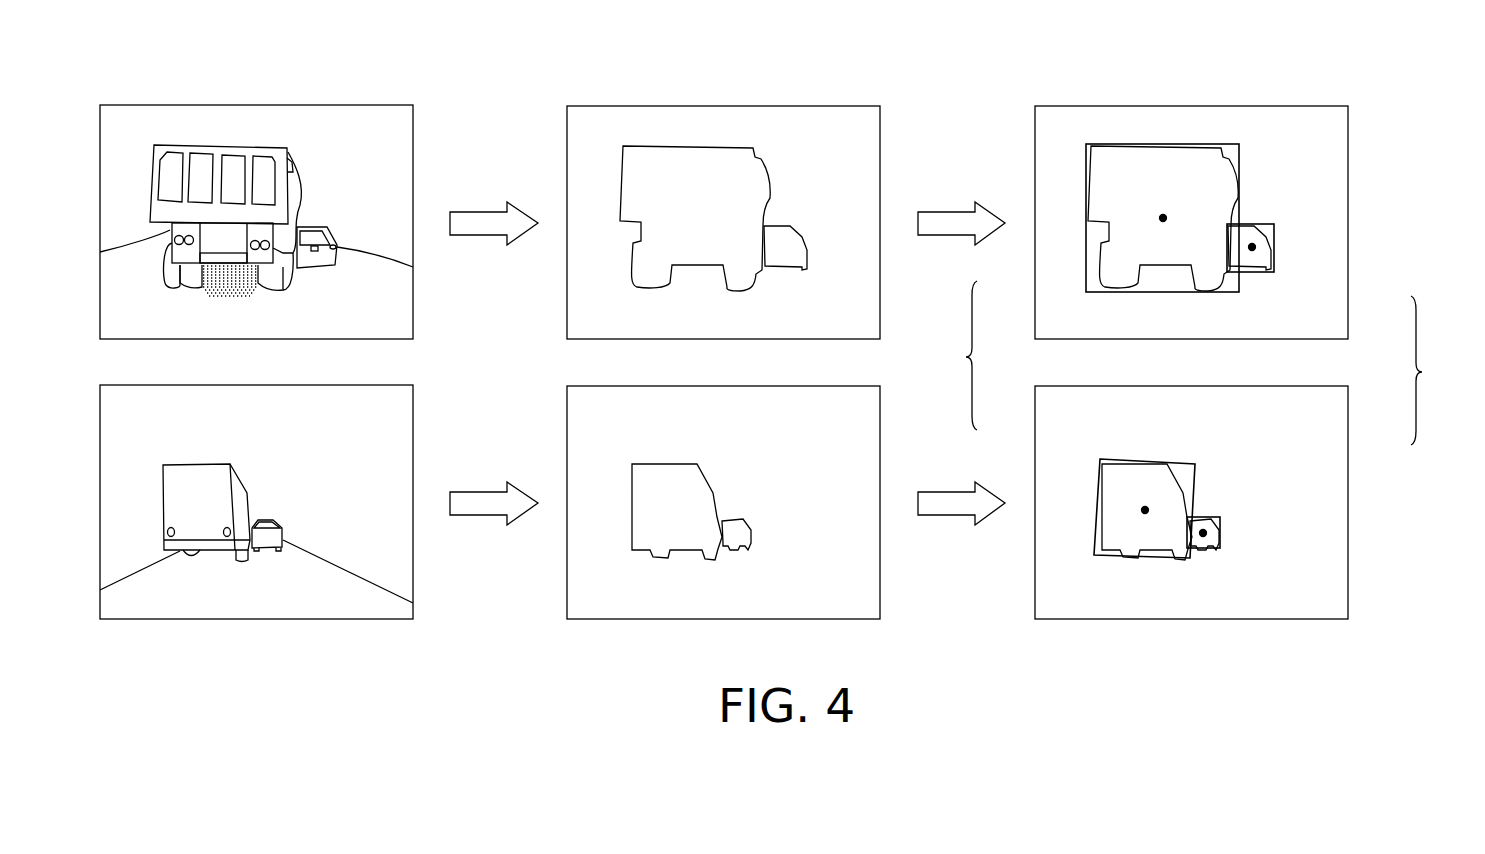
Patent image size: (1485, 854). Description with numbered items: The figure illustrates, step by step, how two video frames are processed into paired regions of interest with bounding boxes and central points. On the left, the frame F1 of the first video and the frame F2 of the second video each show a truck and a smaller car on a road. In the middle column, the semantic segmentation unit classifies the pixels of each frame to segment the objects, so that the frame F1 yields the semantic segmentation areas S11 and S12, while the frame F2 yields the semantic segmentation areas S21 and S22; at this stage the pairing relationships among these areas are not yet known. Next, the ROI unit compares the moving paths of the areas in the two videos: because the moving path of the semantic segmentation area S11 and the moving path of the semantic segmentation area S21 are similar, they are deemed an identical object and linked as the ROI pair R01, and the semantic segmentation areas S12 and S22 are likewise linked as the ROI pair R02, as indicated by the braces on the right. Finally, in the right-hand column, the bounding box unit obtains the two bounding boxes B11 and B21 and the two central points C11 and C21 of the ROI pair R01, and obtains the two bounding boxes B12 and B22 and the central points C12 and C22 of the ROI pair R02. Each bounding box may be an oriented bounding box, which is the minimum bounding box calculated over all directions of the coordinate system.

The frame F1 is at (323, 105).
The frame F2 is at (323, 385).
The semantic segmentation area S11 is at (744, 146).
The semantic segmentation area S12 is at (793, 226).
The semantic segmentation area S21 is at (707, 478).
The semantic segmentation area S22 is at (743, 518).
The bounding box B11 is at (1163, 144).
The bounding box B12 is at (1250, 224).
The bounding box B21 is at (1167, 463).
The bounding box B22 is at (1203, 553).
The central point C11 is at (1165, 212).
The central point C12 is at (1256, 247).
The central point C21 is at (1148, 507).
The central point C22 is at (1208, 535).
The regions of interest pair R01 is at (949, 355).
The regions of interest pair R02 is at (1442, 370).